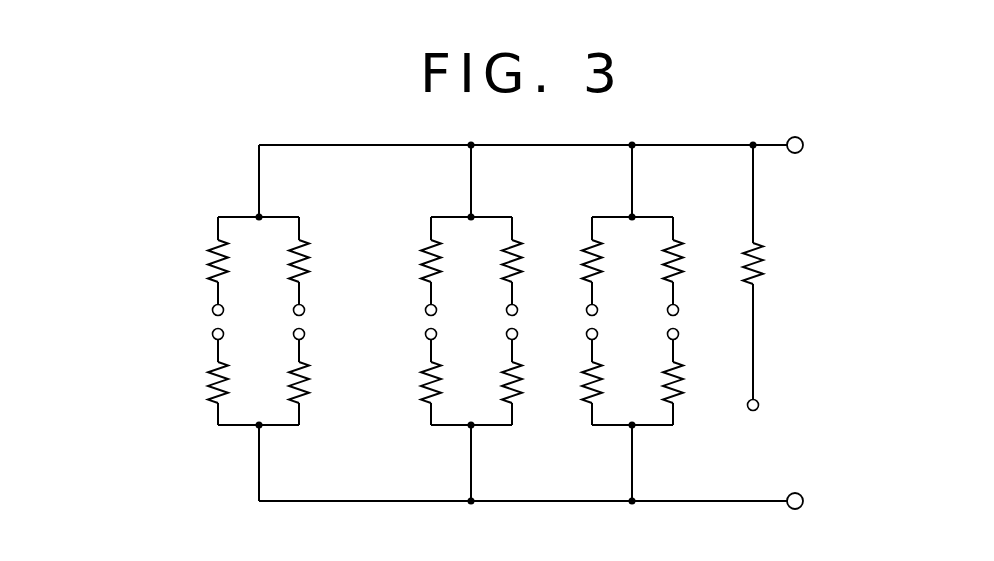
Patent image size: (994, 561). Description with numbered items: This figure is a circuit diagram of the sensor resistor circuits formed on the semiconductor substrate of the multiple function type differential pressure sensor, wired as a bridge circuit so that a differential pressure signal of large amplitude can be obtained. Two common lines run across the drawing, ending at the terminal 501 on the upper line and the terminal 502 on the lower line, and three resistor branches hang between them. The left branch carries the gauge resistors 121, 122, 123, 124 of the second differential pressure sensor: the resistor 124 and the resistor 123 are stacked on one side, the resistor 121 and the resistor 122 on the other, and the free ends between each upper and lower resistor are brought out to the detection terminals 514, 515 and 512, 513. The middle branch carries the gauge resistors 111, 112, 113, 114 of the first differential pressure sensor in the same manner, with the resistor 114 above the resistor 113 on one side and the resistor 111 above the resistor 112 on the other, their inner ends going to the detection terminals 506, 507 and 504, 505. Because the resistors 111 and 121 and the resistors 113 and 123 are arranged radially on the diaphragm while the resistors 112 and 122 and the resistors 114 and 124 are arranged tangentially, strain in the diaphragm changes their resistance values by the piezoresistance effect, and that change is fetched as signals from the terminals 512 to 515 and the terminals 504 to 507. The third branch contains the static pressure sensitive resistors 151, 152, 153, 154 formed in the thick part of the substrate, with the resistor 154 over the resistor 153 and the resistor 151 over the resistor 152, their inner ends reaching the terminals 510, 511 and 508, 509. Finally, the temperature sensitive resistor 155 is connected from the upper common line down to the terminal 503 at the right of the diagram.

The gauge resistor 111 is at (501, 270).
The gauge resistor 112 is at (503, 386).
The gauge resistor 113 is at (425, 393).
The gauge resistor 114 is at (423, 265).
The gauge resistor 121 is at (289, 270).
The gauge resistor 122 is at (310, 384).
The gauge resistor 123 is at (208, 382).
The gauge resistor 124 is at (212, 266).
The static pressure sensitive resistor 151 is at (663, 270).
The static pressure sensitive resistor 152 is at (664, 378).
The static pressure sensitive resistor 153 is at (586, 394).
The static pressure sensitive resistor 154 is at (588, 266).
The temperature sensitive resistor 155 is at (761, 261).
The terminal 501 is at (801, 140).
The terminal 502 is at (801, 495).
The terminal 503 is at (757, 401).
The detection terminal 504 is at (518, 310).
The detection terminal 505 is at (518, 334).
The detection terminal 506 is at (437, 310).
The detection terminal 507 is at (437, 334).
The terminal 508 is at (679, 310).
The terminal 509 is at (679, 334).
The terminal 510 is at (598, 310).
The terminal 511 is at (598, 334).
The detection terminal 512 is at (305, 308).
The detection terminal 513 is at (305, 334).
The detection terminal 514 is at (212, 308).
The detection terminal 515 is at (212, 334).